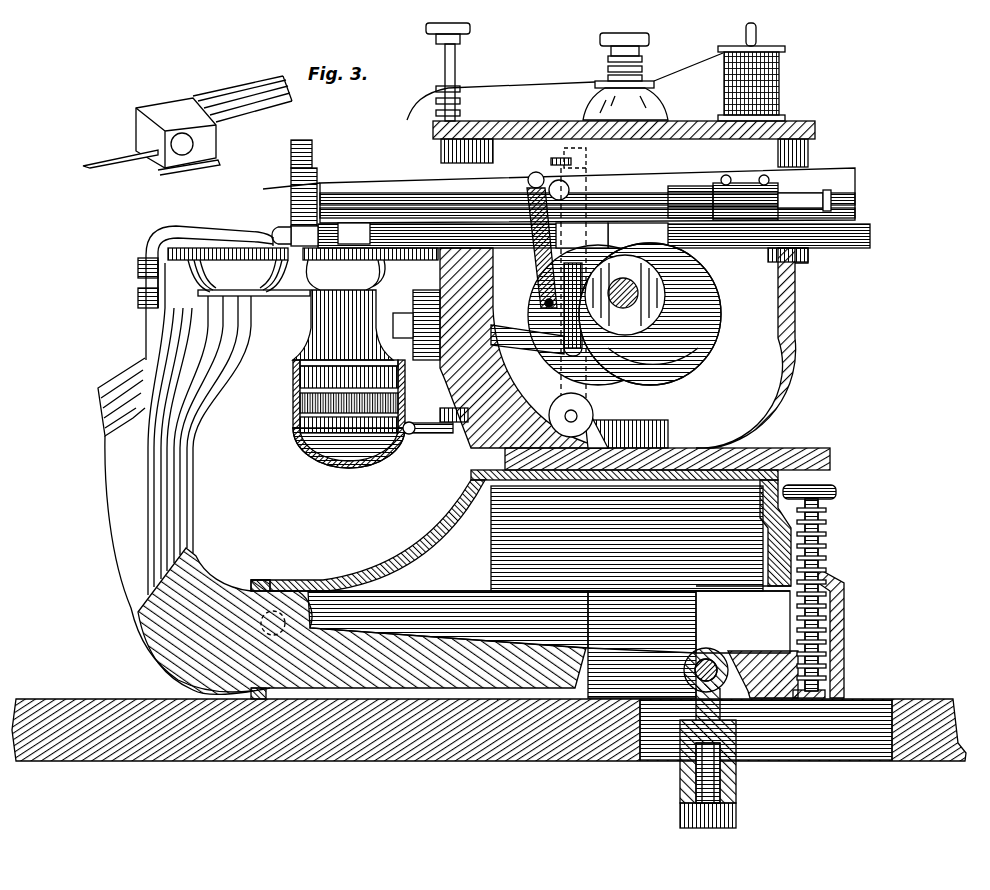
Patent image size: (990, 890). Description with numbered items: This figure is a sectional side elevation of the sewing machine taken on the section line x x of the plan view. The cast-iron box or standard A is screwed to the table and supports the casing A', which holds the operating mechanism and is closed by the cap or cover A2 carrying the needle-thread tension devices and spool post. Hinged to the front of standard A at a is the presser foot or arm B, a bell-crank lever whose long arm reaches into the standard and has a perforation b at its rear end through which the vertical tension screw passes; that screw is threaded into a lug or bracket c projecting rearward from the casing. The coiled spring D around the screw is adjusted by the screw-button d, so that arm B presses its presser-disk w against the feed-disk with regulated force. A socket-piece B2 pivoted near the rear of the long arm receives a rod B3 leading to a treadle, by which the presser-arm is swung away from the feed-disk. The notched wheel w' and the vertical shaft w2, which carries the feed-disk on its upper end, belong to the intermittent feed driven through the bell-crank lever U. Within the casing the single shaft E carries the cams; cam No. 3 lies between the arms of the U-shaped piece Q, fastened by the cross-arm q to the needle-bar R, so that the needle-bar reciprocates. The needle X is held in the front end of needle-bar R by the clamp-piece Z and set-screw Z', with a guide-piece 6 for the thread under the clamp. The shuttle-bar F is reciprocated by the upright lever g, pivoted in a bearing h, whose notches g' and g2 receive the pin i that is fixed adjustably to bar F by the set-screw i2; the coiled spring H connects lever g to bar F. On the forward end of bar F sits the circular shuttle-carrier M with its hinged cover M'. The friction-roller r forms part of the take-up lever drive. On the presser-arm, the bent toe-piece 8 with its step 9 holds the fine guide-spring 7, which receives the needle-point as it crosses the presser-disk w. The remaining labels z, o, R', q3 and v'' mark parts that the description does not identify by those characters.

The needle-bar R is at (252, 99).
The needle X is at (120, 164).
The clamp-piece Z is at (513, 172).
The guide-piece 6 is at (170, 160).
The set-screw Z' is at (178, 144).
The hinged cover M' is at (284, 154).
The shuttle-carrier M is at (288, 207).
The toe-piece 8 is at (209, 257).
The step 9 is at (191, 263).
The guide-spring 7 is at (271, 238).
The block z is at (354, 233).
The presser-disk w is at (293, 336).
The bridge piece x is at (305, 270).
The curved arm v'' is at (357, 275).
The bushing q3 is at (368, 320).
The vertical shaft w2 is at (349, 414).
The notched wheel w' is at (325, 422).
The friction-roller r is at (410, 428).
The presser foot or arm B is at (342, 479).
The hinge a is at (252, 560).
The cast-iron box or standard A is at (521, 589).
The socket-piece B2 is at (724, 725).
The rod B3 is at (672, 812).
The perforation b is at (836, 668).
The coiled spring D is at (810, 495).
The lug or bracket c is at (818, 522).
The screw-button d is at (828, 480).
The plate o is at (822, 452).
The casing A' is at (624, 348).
The U-shaped piece Q is at (712, 300).
The shaft E is at (625, 295).
The cam No. 3 is at (653, 349).
The upright lever g is at (578, 417).
The bearing h is at (700, 348).
The bell-crank lever U is at (527, 334).
The coiled spring H is at (556, 270).
The belt strip R' is at (543, 288).
The notch g' is at (532, 165).
The set-screw i2 is at (569, 149).
The pin i is at (561, 180).
The notch g2 is at (582, 235).
The cross-arm q is at (638, 235).
The shuttle-bar F is at (559, 190).
The cap or cover A2 is at (624, 86).